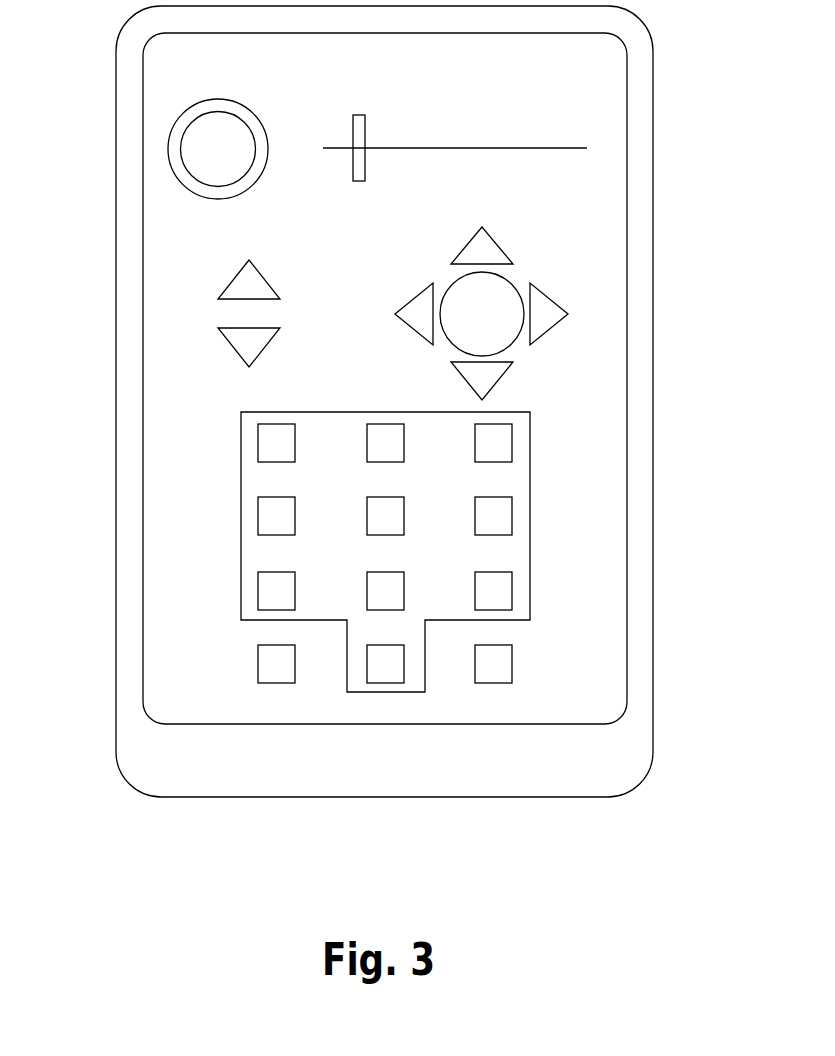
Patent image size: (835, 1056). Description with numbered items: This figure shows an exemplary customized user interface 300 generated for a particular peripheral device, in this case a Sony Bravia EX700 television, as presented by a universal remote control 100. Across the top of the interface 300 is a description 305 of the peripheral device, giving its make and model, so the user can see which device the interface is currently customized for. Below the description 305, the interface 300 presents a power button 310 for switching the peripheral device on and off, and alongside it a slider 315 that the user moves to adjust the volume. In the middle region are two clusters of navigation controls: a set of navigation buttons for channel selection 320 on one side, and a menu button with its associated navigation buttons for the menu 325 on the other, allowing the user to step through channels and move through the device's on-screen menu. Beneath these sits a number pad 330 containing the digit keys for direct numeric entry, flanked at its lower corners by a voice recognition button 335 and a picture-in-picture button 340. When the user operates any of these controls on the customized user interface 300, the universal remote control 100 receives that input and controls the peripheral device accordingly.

The universal remote control 100 is at (397, 775).
The customized user interface 300 is at (172, 562).
The description of the peripheral device 305 is at (512, 70).
The power button 310 is at (177, 179).
The slider 315 is at (548, 168).
The navigation buttons for channel selection 320 is at (200, 337).
The menu and associated navigation buttons 325 is at (548, 298).
The number pad 330 is at (512, 441).
The voice recognition button 335 is at (258, 664).
The picture-in-picture button 340 is at (512, 661).